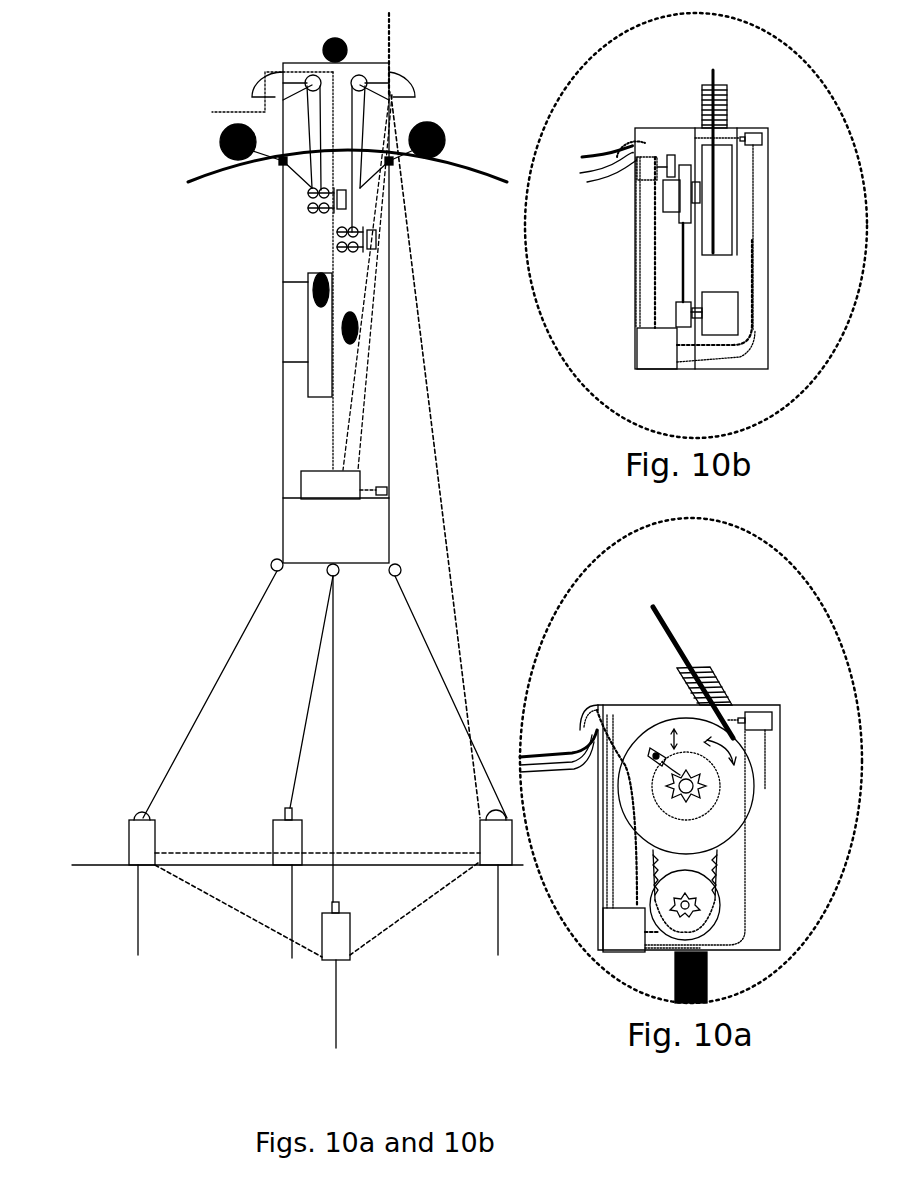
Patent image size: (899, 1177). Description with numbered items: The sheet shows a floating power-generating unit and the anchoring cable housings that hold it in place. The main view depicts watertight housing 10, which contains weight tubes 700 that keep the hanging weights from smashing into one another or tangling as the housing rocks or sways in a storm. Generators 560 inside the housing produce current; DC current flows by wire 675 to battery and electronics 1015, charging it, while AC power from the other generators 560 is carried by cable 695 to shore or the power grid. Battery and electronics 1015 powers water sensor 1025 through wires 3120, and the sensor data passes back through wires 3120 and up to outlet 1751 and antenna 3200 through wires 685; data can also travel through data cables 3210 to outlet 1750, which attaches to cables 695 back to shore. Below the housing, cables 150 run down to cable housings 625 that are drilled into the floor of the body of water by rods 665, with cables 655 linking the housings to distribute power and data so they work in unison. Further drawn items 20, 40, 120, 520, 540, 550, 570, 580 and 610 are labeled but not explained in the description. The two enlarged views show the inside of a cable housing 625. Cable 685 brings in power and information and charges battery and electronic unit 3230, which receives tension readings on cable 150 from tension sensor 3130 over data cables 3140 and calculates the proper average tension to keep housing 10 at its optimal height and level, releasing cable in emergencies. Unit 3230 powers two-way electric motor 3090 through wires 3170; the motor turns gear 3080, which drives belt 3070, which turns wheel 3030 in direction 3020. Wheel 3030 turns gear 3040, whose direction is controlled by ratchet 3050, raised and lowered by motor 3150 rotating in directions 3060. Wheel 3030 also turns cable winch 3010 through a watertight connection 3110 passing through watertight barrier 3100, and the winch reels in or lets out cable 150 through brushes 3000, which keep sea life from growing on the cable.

In FIG. 10, the watertight housing 10 is at (283, 423).
In FIG. 10, the arc / ground surface 20 is at (206, 172).
In FIG. 10, the top ball 40 is at (326, 44).
In FIG. 10, the lower compartment 120 is at (370, 545).
In FIG. 10, the cable 150 is at (220, 672).
In FIG. 10B, the cable 150 is at (714, 72).
In FIG. 10A, the cable 150 is at (660, 610).
In FIG. 10, the ballast balls 520 is at (226, 130).
In FIG. 10, the cable clamps 540 is at (282, 165).
In FIG. 10, the support lines 550 is at (300, 183).
In FIG. 10, the generators 560 is at (310, 215).
In FIG. 10, the left counterweight 570 is at (312, 305).
In FIG. 10, the pulleys 580 is at (308, 76).
In FIG. 10, the right counterweight 610 is at (358, 327).
In FIG. 10, the cable housing 625 is at (135, 848).
In FIG. 10B, the cable housing 625 is at (755, 370).
In FIG. 10A, the cable housing 625 is at (600, 903).
In FIG. 10, the cables 655 is at (205, 885).
In FIG. 10B, the cables 655 is at (587, 176).
In FIG. 10A, the cables 655 is at (545, 762).
In FIG. 10, the rod 665 is at (497, 883).
In FIG. 10A, the rod 665 is at (708, 962).
In FIG. 10, the wire 675 is at (345, 433).
In FIG. 10, the cable 685 is at (363, 442).
In FIG. 10B, the cable 685 is at (602, 153).
In FIG. 10A, the cable 685 is at (578, 743).
In FIG. 10, the cable 695 is at (232, 110).
In FIG. 10, the weight tubes 700 is at (308, 378).
In FIG. 10, the battery and electronics 1015 is at (301, 490).
In FIG. 10, the water sensor 1025 is at (387, 490).
In FIG. 10, the outlet 1750 is at (262, 80).
In FIG. 10, the outlet 1751 is at (410, 89).
In FIG. 10B, the brushes 3000 is at (727, 100).
In FIG. 10A, the brushes 3000 is at (718, 675).
In FIG. 10B, the cable winch 3010 is at (722, 185).
In FIG. 10A, the cable winch 3010 is at (755, 777).
In FIG. 10A, the direction 3020 is at (779, 740).
In FIG. 10B, the wheel 3030 is at (688, 165).
In FIG. 10A, the wheel 3030 is at (687, 750).
In FIG. 10B, the gear 3040 is at (670, 195).
In FIG. 10A, the gear 3040 is at (672, 798).
In FIG. 10B, the ratchet 3050 is at (640, 158).
In FIG. 10A, the ratchet 3050 is at (650, 800).
In FIG. 10A, the directions 3060 is at (621, 755).
In FIG. 10B, the belt 3070 is at (683, 275).
In FIG. 10A, the belt 3070 is at (716, 870).
In FIG. 10B, the gear 3080 is at (676, 310).
In FIG. 10A, the gear 3080 is at (690, 895).
In FIG. 10B, the two-way electric motor 3090 is at (720, 315).
In FIG. 10A, the two-way electric motor 3090 is at (648, 907).
In FIG. 10B, the watertight barrier 3100 is at (740, 250).
In FIG. 10B, the watertight connection 3110 is at (690, 238).
In FIG. 10, the wires 3120 is at (368, 496).
In FIG. 10B, the tension sensor 3130 is at (757, 146).
In FIG. 10A, the tension sensor 3130 is at (757, 712).
In FIG. 10B, the data cables 3140 is at (755, 328).
In FIG. 10A, the data cables 3140 is at (742, 925).
In FIG. 10B, the motor 3150 is at (636, 190).
In FIG. 10A, the motor 3150 is at (606, 767).
In FIG. 10B, the wires 3170 is at (700, 350).
In FIG. 10A, the wires 3170 is at (656, 940).
In FIG. 10, the antenna 3200 is at (392, 18).
In FIG. 10, the data cables 3210 is at (301, 464).
In FIG. 10B, the battery and electronic unit 3230 is at (657, 338).
In FIG. 10A, the battery and electronic unit 3230 is at (623, 930).